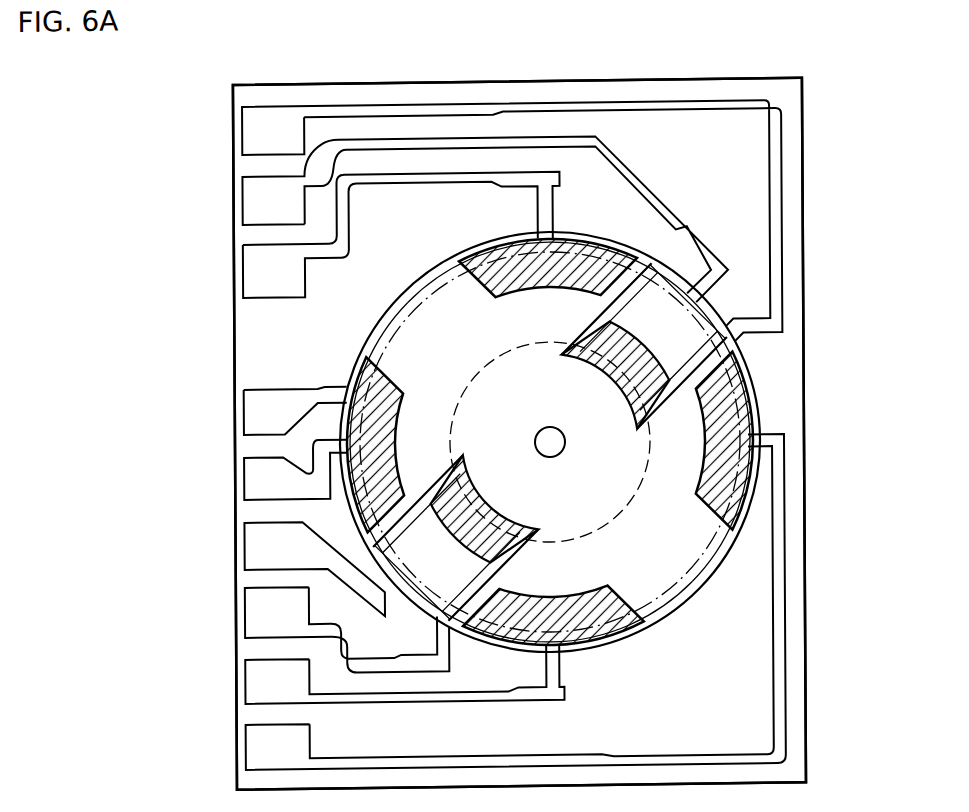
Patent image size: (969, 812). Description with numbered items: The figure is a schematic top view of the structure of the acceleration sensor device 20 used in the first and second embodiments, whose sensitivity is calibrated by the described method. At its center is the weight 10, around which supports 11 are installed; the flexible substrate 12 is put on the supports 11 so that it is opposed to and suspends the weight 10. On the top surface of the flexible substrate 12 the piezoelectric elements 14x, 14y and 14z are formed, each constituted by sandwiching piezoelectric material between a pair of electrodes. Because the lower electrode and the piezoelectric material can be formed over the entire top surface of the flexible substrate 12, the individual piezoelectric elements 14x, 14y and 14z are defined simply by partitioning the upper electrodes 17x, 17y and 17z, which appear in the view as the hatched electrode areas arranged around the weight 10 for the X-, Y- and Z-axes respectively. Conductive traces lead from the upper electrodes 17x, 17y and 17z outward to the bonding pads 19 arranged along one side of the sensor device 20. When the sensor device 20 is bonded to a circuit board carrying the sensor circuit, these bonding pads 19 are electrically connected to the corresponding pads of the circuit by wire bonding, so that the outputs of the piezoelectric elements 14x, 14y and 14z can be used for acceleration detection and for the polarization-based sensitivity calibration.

The sensor device 20 is at (832, 96).
The support 11 is at (750, 723).
The weight 10 is at (628, 468).
The flexible substrate 12 is at (697, 532).
The bonding pad 19 is at (250, 266).
The upper electrode 17x is at (748, 411).
The piezoelectric element 14x is at (550, 442).
The upper electrode 17y is at (515, 243).
The piezoelectric element 14y is at (549, 442).
The upper electrode 17z is at (720, 322).
The piezoelectric element 14z is at (549, 442).